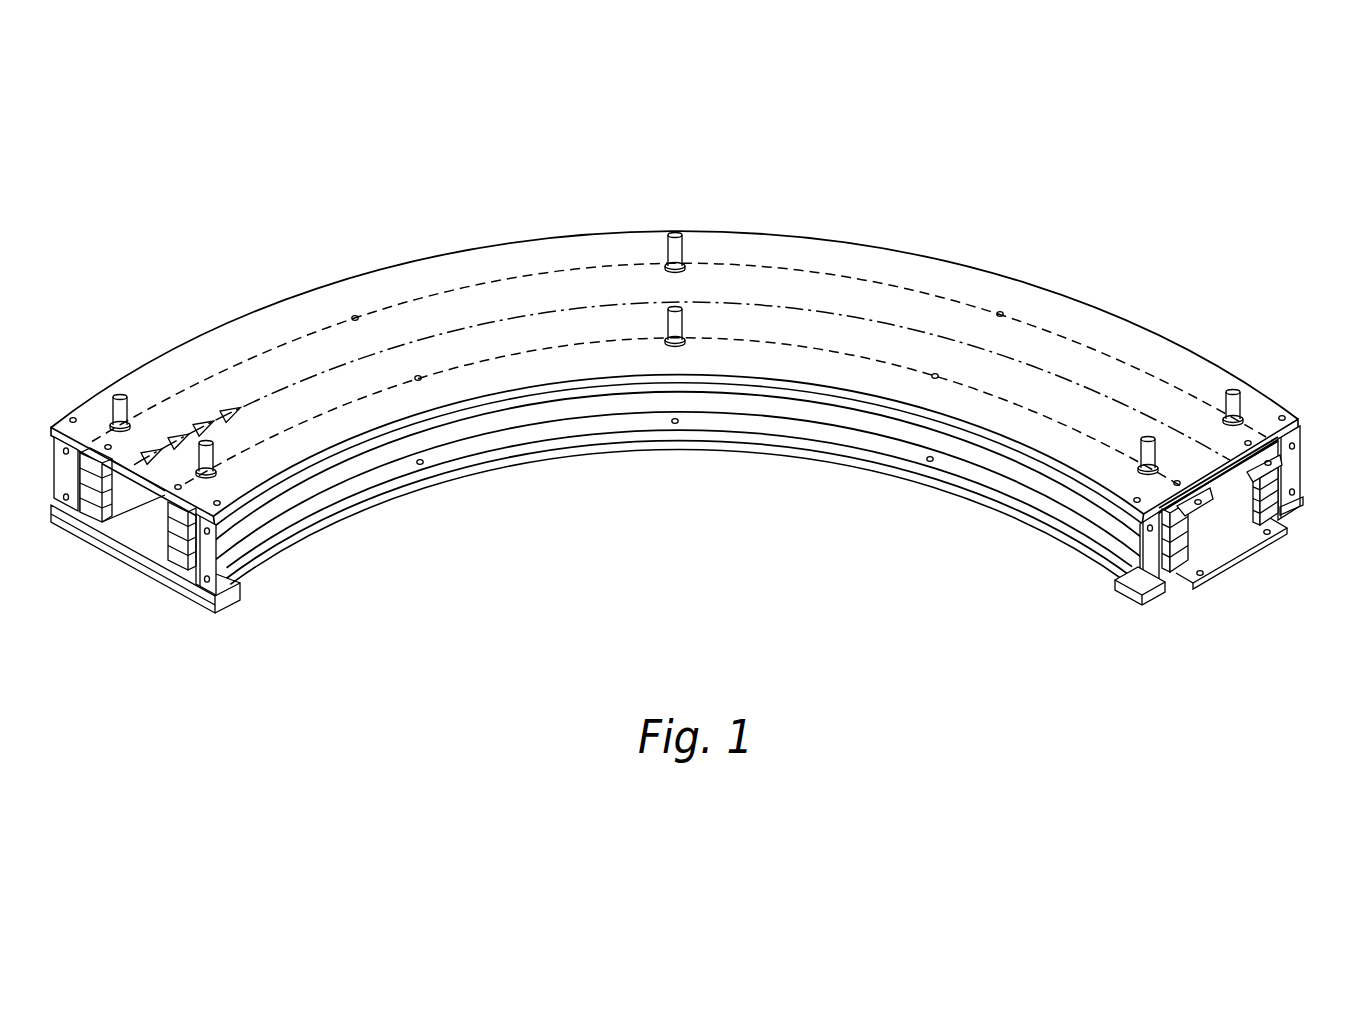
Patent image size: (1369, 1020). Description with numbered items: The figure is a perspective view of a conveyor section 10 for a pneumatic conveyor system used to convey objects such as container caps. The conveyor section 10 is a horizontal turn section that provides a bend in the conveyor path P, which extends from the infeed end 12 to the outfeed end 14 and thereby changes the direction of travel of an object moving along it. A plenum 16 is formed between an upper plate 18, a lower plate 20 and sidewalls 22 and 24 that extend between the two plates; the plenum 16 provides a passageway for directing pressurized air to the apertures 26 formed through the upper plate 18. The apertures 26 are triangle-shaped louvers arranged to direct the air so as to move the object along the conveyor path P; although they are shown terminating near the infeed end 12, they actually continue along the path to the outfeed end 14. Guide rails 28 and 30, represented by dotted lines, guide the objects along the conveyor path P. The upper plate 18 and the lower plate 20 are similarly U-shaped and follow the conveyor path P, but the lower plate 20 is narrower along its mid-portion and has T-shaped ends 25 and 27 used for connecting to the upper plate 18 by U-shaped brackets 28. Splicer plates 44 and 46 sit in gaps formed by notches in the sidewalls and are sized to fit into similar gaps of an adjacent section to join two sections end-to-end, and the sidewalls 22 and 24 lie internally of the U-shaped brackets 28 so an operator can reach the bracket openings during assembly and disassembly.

The conveyor section 10 is at (1090, 161).
The infeed end 12 is at (90, 655).
The outfeed end 14 is at (1295, 633).
The plenum 16 is at (1197, 532).
The upper plate 18 is at (906, 262).
The lower plate 20 is at (462, 480).
The sidewall 22 is at (1055, 487).
The sidewall 24 is at (1250, 497).
The T-shaped end 25 is at (137, 565).
The apertures 26 is at (202, 415).
The T-shaped end 27 is at (1122, 598).
The U-shaped brackets 28 is at (478, 283).
The guide rail 30 is at (775, 335).
The splicer plate 44 is at (1262, 462).
The splicer plate 46 is at (1237, 543).
The conveyor path P is at (605, 302).